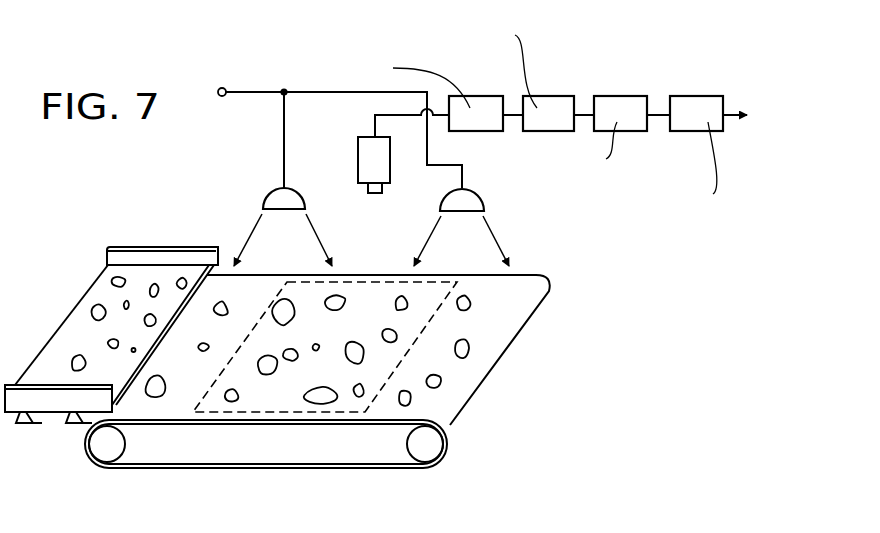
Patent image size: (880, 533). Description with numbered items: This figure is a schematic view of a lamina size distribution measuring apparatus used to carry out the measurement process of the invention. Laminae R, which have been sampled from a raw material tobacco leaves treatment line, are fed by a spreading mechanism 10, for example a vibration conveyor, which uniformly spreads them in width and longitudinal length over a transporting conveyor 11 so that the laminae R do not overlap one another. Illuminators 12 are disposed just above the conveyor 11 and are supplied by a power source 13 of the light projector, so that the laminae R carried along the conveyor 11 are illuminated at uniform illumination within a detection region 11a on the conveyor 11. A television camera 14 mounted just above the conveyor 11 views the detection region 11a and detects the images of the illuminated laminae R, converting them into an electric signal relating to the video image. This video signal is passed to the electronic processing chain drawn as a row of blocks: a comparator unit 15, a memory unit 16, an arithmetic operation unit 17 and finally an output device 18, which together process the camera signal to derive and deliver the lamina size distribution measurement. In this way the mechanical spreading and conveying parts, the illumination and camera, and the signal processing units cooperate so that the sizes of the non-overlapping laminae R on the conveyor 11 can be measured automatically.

The spreading mechanism 10 is at (153, 247).
The transporting conveyor 11 is at (277, 428).
The detection region 11a is at (215, 410).
The illuminators 12 is at (265, 197).
The power source of the light projector 13 is at (219, 89).
The television camera 14 is at (356, 158).
The comparator unit 15 is at (480, 95).
The memory unit 16 is at (550, 95).
The arithmetic operation unit 17 is at (621, 95).
The output device 18 is at (697, 95).
The laminae R is at (97, 312).